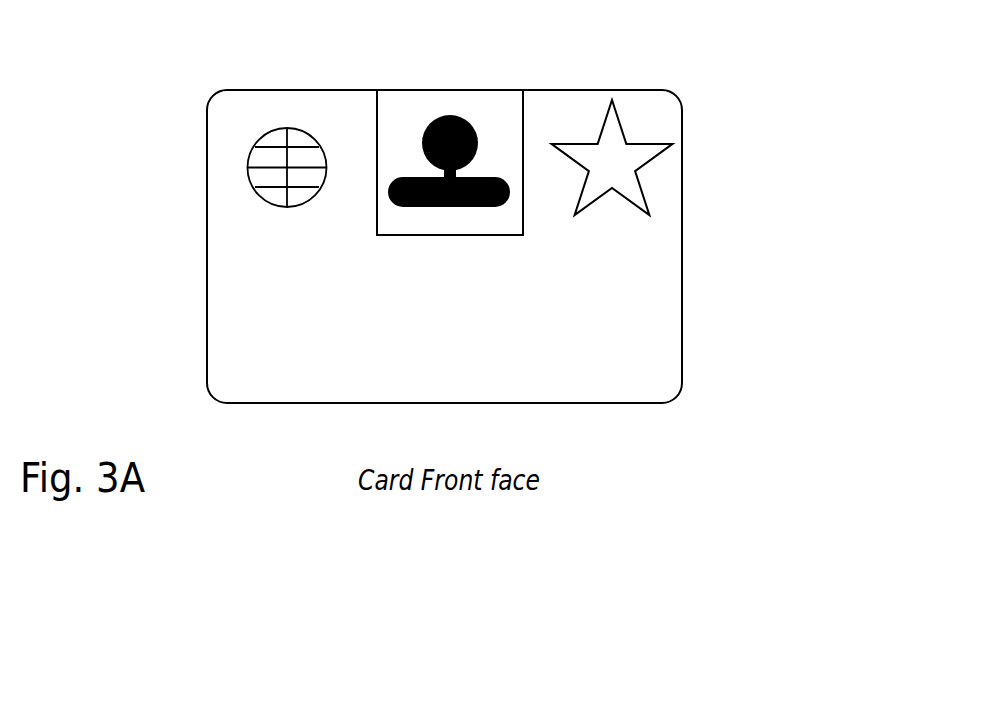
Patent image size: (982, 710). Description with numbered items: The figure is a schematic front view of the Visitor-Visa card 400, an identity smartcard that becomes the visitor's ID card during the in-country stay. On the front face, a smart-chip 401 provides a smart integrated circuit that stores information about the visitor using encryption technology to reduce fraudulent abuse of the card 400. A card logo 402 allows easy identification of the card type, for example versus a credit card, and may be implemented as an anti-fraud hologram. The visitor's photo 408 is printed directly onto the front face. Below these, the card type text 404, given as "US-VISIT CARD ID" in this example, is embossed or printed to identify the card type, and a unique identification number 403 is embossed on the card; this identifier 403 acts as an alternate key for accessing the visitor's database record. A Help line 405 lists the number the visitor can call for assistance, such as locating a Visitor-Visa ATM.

The Visitor-Visa card 400 is at (247, 89).
The smart-chip 401 is at (258, 157).
The card logo 402 is at (623, 132).
The unique identification number 403 is at (533, 315).
The card type text 404 is at (558, 276).
The Help line 405 is at (342, 358).
The visitor's photo 408 is at (494, 120).